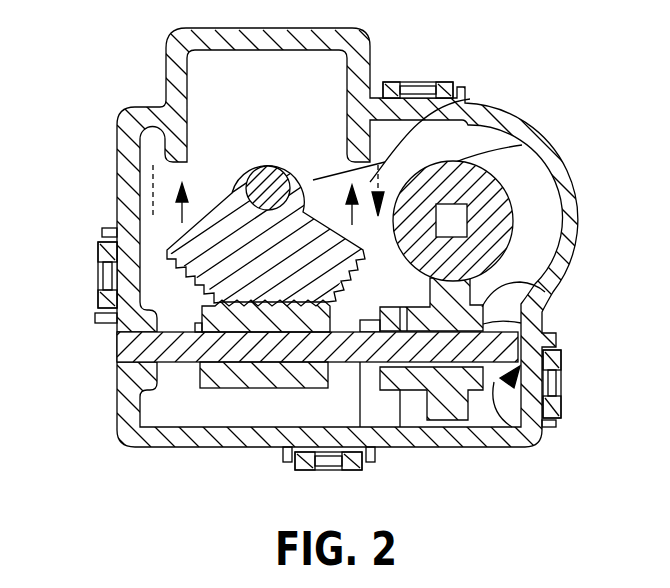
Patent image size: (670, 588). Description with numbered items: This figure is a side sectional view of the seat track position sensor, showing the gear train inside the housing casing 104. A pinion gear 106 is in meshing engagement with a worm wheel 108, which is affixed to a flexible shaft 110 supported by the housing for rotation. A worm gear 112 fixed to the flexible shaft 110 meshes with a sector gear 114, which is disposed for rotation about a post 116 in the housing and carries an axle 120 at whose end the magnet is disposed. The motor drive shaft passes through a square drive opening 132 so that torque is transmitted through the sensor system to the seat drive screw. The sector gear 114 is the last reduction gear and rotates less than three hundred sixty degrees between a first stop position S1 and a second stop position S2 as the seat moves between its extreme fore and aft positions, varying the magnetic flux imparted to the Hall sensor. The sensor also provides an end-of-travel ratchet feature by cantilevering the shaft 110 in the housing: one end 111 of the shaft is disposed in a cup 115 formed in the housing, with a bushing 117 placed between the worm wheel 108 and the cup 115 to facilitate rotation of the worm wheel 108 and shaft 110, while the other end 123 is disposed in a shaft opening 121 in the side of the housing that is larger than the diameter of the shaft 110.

The casing 104 is at (552, 148).
The pinion gear 106 is at (512, 228).
The worm wheel 108 is at (540, 290).
The flexible shaft 110 is at (124, 338).
The shaft end 111 is at (554, 424).
The worm gear 112 is at (214, 390).
The sector gear 114 is at (175, 248).
The cup 115 is at (517, 425).
The post 116 is at (280, 168).
The bushing 117 is at (471, 432).
The axle 120 is at (236, 173).
The shaft opening 121 is at (99, 374).
The other shaft end 123 is at (100, 352).
The square drive opening 132 is at (452, 218).
The first stop position S1 is at (222, 179).
The second stop position S2 is at (382, 177).